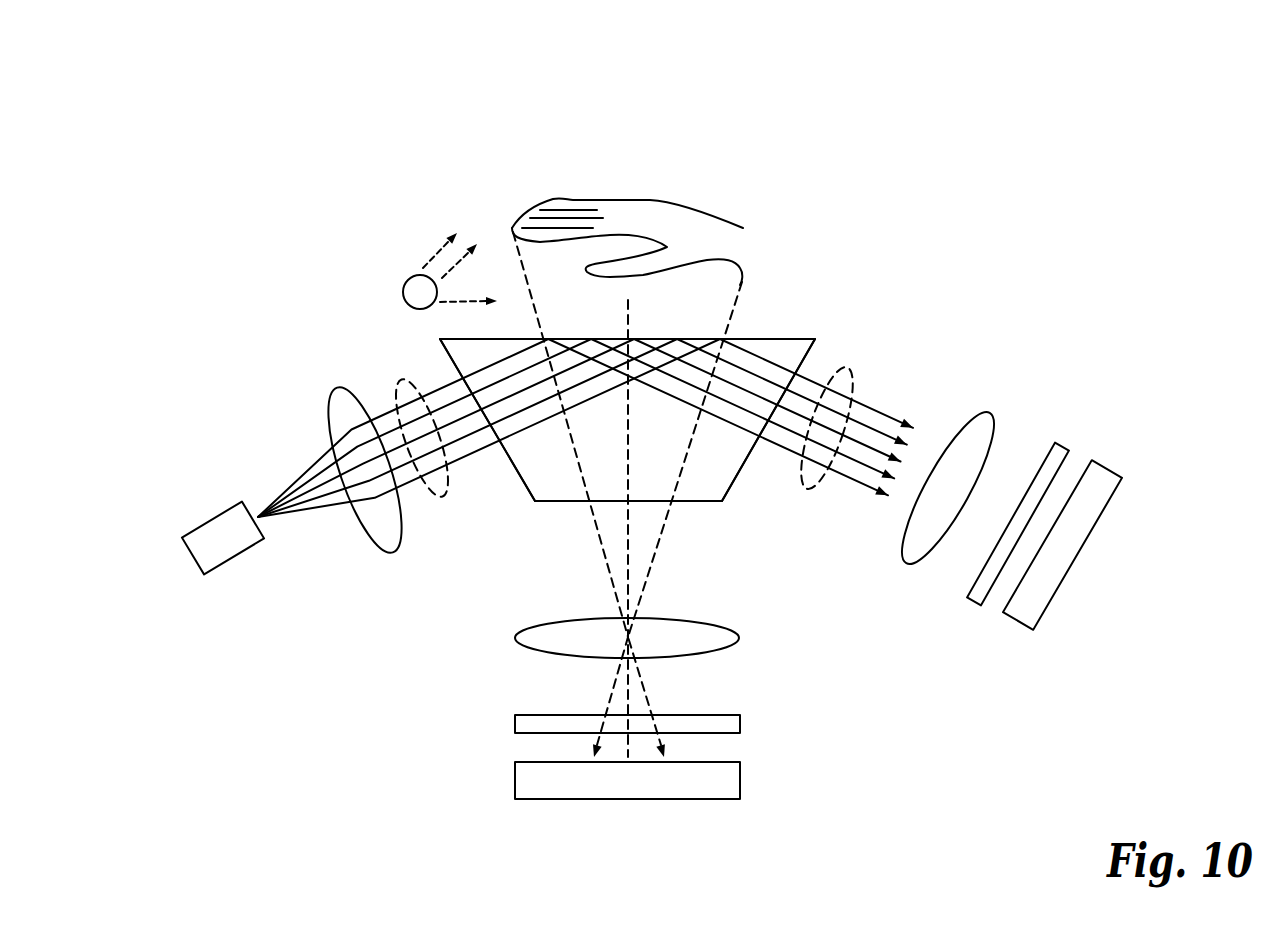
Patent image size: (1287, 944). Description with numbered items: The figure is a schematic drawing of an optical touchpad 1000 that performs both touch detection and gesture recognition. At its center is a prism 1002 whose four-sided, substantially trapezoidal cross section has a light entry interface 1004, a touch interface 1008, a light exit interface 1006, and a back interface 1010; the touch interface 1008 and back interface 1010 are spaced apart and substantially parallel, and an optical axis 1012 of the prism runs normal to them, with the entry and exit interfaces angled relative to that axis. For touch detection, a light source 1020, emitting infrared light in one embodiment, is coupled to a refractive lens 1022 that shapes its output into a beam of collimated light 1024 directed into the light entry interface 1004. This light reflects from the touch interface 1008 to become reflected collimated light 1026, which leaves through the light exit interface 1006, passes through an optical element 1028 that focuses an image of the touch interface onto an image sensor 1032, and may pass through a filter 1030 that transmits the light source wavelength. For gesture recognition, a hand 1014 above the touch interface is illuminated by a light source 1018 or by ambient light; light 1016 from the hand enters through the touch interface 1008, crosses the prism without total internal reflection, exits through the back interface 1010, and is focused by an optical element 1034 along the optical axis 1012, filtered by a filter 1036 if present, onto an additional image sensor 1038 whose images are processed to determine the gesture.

The optical touchpad 1000 is at (306, 105).
The prism 1002 is at (683, 437).
The light entry interface 1004 is at (528, 490).
The light exit interface 1006 is at (816, 344).
The touch interface 1008 is at (763, 338).
The back interface 1010 is at (552, 502).
The optical axis 1012 is at (637, 317).
The hand 1014 is at (720, 217).
The light 1016 is at (658, 547).
The light source 1018 is at (407, 287).
The light source 1020 is at (252, 542).
The lens 1022 is at (398, 545).
The collimated light 1024 is at (400, 380).
The reflected collimated light 1026 is at (807, 488).
The optical element 1028 is at (920, 563).
The filter 1030 is at (1050, 441).
The image sensor 1032 is at (1033, 620).
The optical element 1034 is at (740, 640).
The filter 1036 is at (515, 718).
The image sensor 1038 is at (742, 790).